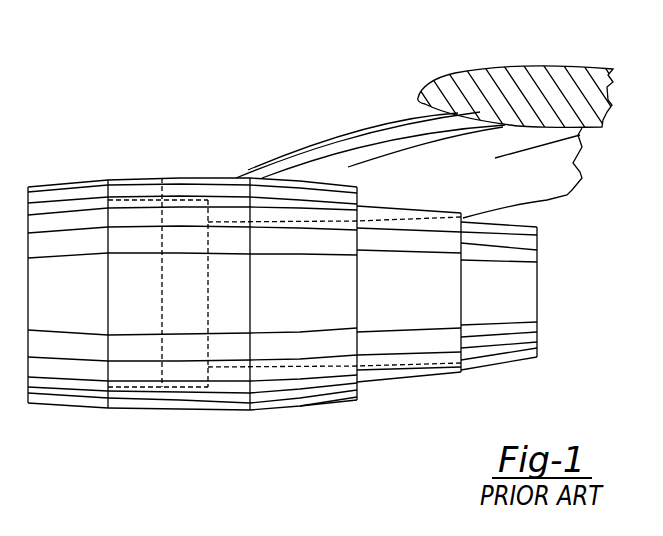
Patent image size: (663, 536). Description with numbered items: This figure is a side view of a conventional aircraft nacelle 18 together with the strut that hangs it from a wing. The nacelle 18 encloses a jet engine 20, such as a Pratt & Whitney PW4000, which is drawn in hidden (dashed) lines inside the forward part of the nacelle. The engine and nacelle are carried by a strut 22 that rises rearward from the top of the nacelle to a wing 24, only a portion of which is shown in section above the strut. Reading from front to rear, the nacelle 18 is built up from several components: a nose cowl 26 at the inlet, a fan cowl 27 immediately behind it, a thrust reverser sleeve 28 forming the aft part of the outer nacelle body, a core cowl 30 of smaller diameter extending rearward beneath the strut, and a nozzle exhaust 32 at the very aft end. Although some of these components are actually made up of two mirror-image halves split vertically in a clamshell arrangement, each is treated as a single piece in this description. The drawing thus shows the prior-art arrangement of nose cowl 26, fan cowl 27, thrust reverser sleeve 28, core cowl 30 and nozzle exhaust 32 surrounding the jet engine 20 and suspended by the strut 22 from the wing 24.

The aircraft nacelle 18 is at (107, 170).
The jet engine 20 is at (162, 178).
The strut 22 is at (318, 153).
The wing 24 is at (553, 72).
The nose cowl 26 is at (55, 207).
The fan cowl 27 is at (212, 178).
The thrust reverser sleeve 28 is at (267, 213).
The core cowl 30 is at (385, 205).
The nozzle exhaust 32 is at (523, 283).